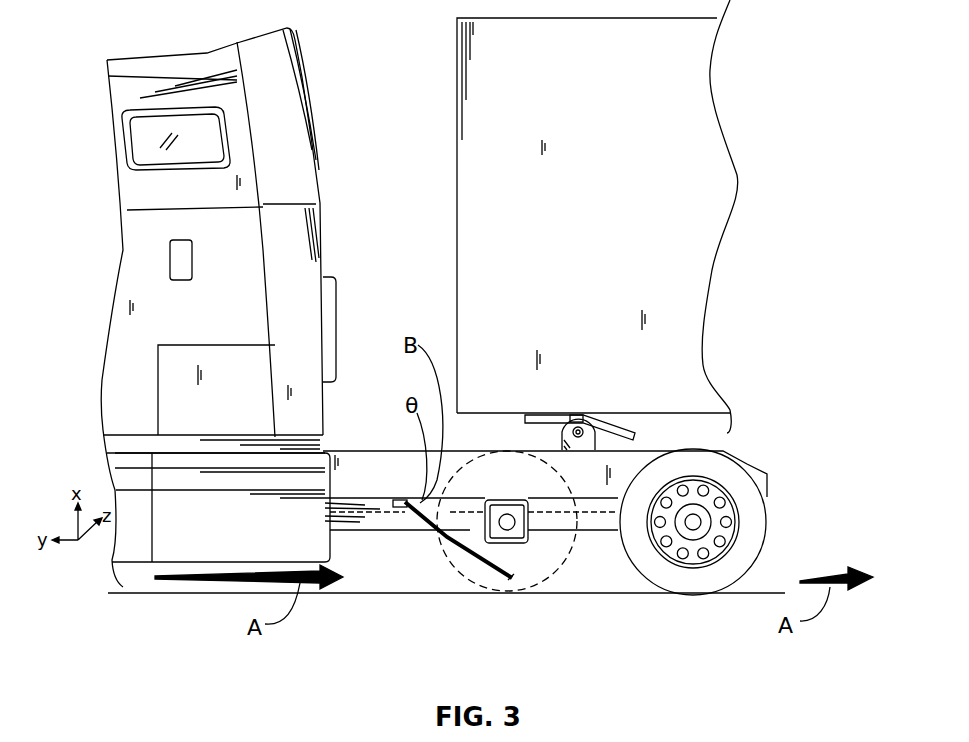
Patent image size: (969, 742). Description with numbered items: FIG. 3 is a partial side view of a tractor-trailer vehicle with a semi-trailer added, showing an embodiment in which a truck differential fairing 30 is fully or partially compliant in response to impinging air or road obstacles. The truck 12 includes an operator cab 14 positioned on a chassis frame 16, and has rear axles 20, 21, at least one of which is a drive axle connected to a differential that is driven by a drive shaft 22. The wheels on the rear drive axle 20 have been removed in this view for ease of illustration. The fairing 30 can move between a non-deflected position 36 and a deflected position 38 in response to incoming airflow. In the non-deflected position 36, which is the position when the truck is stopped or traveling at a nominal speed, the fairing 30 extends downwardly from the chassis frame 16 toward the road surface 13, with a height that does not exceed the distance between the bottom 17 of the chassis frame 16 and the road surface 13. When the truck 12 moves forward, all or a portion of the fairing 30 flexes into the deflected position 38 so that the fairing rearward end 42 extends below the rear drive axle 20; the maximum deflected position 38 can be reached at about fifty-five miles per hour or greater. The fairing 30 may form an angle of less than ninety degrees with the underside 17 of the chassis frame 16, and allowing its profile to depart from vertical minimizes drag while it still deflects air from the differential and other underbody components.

The truck 12 is at (88, 202).
The road surface 13 is at (743, 593).
The operator cab 14 is at (160, 257).
The chassis frame 16 is at (390, 485).
The bottom of the chassis frame 17 is at (390, 502).
The rear drive axle 20 is at (512, 523).
The rear axle 21 is at (693, 523).
The drive shaft 22 is at (340, 512).
The truck differential fairing 30 is at (407, 512).
The non-deflected position 36 is at (462, 560).
The deflected position 38 is at (527, 557).
The fairing rearward end 42 is at (512, 583).